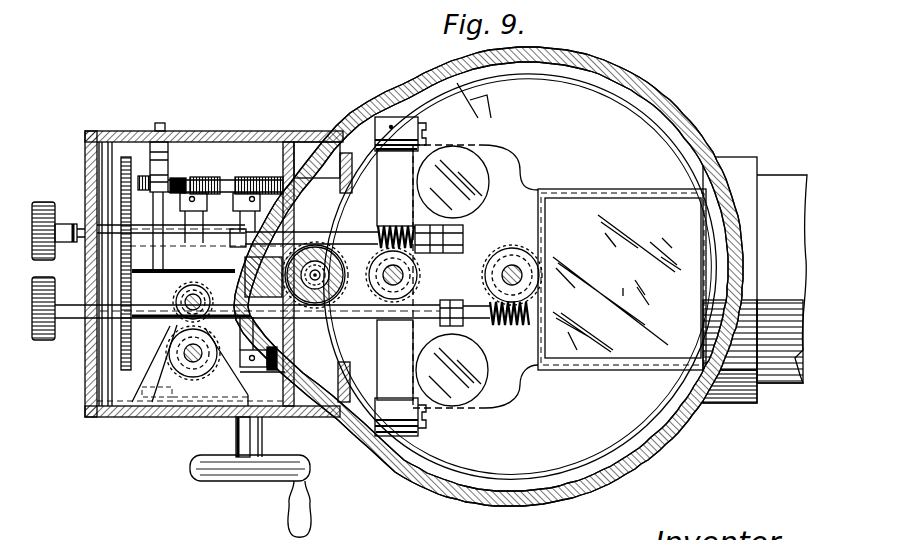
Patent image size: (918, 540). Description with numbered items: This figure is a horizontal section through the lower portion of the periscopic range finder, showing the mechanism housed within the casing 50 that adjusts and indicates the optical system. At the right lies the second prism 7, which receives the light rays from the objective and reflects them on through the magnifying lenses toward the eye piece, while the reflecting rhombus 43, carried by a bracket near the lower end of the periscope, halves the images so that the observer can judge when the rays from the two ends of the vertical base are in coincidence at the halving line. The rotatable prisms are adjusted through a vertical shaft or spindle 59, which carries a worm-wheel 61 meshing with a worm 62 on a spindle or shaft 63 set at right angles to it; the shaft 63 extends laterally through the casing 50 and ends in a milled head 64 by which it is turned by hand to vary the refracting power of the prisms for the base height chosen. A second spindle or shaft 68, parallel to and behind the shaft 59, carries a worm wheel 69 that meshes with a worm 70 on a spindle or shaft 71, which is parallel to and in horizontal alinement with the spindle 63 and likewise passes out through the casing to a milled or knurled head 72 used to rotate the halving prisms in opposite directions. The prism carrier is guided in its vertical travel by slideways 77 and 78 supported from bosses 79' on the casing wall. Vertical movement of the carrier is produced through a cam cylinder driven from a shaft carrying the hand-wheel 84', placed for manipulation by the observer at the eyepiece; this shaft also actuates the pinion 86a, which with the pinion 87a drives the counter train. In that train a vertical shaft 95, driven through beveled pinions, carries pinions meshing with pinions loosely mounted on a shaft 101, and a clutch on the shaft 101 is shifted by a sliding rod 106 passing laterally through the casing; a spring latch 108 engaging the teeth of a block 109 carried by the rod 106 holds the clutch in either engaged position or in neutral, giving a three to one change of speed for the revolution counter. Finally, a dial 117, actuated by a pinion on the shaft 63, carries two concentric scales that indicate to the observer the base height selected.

The second prism 7 is at (609, 207).
The reflecting rhombus 43 is at (468, 182).
The casing 50 is at (235, 178).
The vertical shaft or spindle 59 is at (313, 286).
The worm-wheel 61 is at (420, 272).
The worm 62 is at (380, 232).
The spindle or shaft 63 is at (313, 241).
The milled head 64 is at (67, 192).
The spindle or shaft 68 is at (546, 213).
The worm wheel 69 is at (513, 268).
The worm 70 is at (504, 323).
The spindle or shaft 71 is at (386, 328).
The milled or knurled head 72 is at (50, 342).
The slideway 77 is at (353, 168).
The slideway 78 is at (362, 357).
The bosses 79' is at (510, 273).
The hand-wheel 84' is at (249, 477).
The pinion 86a is at (245, 182).
The pinion 87a is at (176, 158).
The vertical shaft 95 is at (194, 410).
The shaft 101 is at (165, 410).
The sliding rod 106 is at (160, 125).
The spring latch 108 is at (145, 172).
The block 109 is at (110, 175).
The dial 117 is at (124, 412).